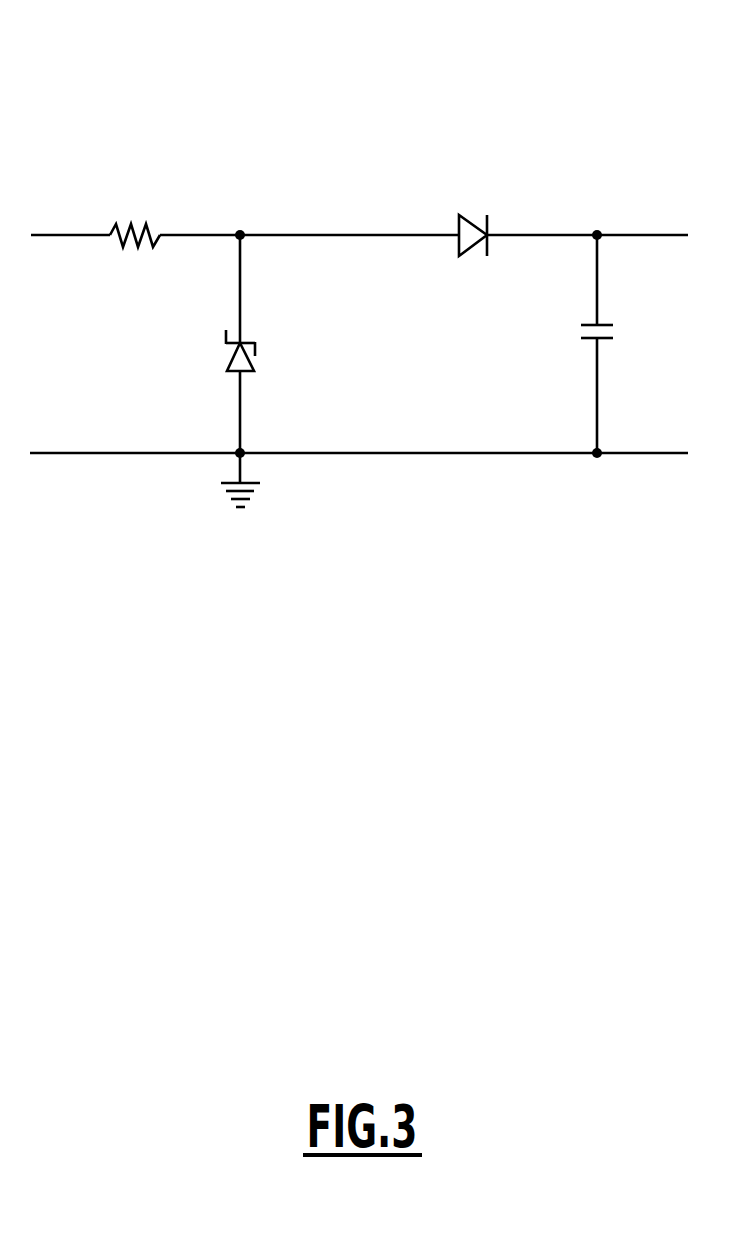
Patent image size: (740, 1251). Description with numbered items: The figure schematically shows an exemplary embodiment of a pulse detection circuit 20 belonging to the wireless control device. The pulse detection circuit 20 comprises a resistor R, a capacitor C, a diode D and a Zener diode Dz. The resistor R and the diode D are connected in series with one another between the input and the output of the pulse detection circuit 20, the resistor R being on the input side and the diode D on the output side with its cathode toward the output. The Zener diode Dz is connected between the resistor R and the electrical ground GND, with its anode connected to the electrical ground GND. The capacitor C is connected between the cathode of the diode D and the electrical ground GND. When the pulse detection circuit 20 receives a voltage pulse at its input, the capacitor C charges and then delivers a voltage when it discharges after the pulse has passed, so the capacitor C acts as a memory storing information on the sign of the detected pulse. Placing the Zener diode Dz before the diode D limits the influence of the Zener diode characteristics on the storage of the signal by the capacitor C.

The pulse detection circuit 20 is at (226, 80).
The resistor R is at (127, 210).
The diode D is at (481, 197).
The Zener diode Dz is at (279, 372).
The capacitor C is at (640, 353).
The electrical ground GND is at (264, 486).